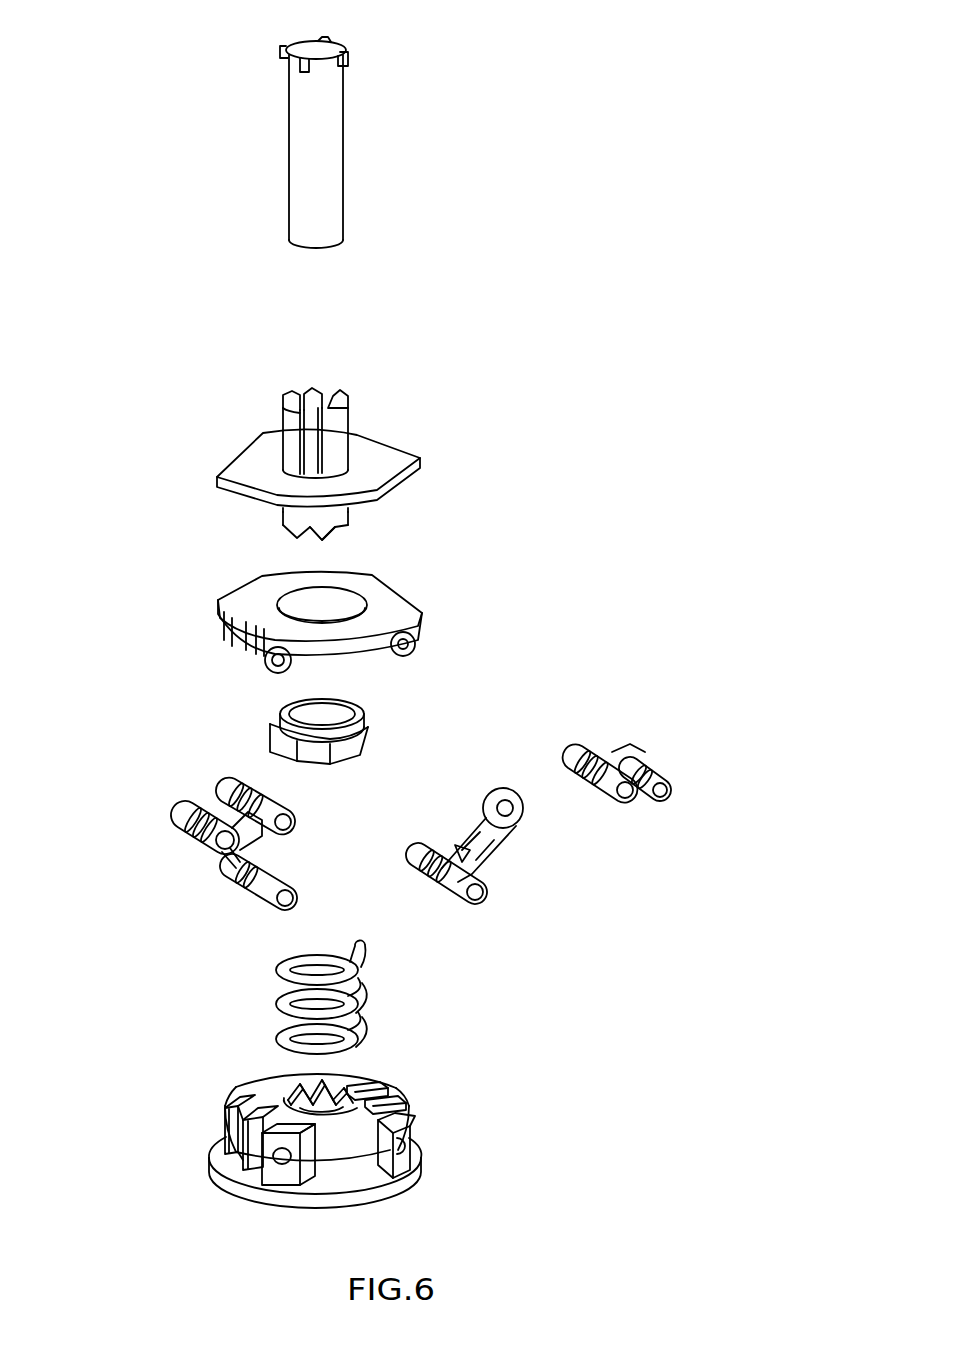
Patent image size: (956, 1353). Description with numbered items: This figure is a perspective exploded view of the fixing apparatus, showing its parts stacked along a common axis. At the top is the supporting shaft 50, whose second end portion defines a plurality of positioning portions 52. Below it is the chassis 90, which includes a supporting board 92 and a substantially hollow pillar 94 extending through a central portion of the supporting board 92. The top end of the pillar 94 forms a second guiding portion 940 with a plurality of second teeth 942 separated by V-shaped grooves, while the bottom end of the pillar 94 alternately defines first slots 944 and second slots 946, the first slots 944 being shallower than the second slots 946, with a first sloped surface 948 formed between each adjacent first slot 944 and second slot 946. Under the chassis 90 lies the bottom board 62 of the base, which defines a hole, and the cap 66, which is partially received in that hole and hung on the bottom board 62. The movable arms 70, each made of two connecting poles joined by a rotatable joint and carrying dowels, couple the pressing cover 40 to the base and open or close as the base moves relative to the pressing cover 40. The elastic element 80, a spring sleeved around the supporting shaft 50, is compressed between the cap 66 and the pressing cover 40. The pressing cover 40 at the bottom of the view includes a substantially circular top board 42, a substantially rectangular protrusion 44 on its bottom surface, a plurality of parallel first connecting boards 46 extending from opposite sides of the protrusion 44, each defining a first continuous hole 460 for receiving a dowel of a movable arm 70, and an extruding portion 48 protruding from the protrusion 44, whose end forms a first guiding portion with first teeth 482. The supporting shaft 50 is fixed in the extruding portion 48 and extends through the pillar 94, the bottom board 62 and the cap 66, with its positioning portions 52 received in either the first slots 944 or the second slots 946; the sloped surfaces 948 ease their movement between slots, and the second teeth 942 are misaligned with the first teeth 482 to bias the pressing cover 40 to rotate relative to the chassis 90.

The pressing cover 40 is at (520, 1105).
The top board 42 is at (414, 1178).
The protrusion 44 is at (315, 1163).
The first connecting boards 46 is at (380, 1118).
The extruding portion 48 is at (388, 1088).
The first continuous hole 460 is at (282, 1159).
The first teeth 482 is at (315, 1095).
The supporting shaft 50 is at (333, 162).
The positioning portions 52 is at (350, 55).
The bottom board 62 is at (385, 625).
The cap 66 is at (368, 733).
The movable arms 70 is at (190, 833).
The elastic element 80 is at (360, 1013).
The chassis 90 is at (565, 190).
The supporting board 92 is at (250, 467).
The hollow pillar 94 is at (478, 292).
The second guiding portion 940 is at (330, 534).
The second teeth 942 is at (328, 540).
The first slots 944 is at (305, 390).
The second slots 946 is at (323, 390).
The first sloped surface 948 is at (312, 390).